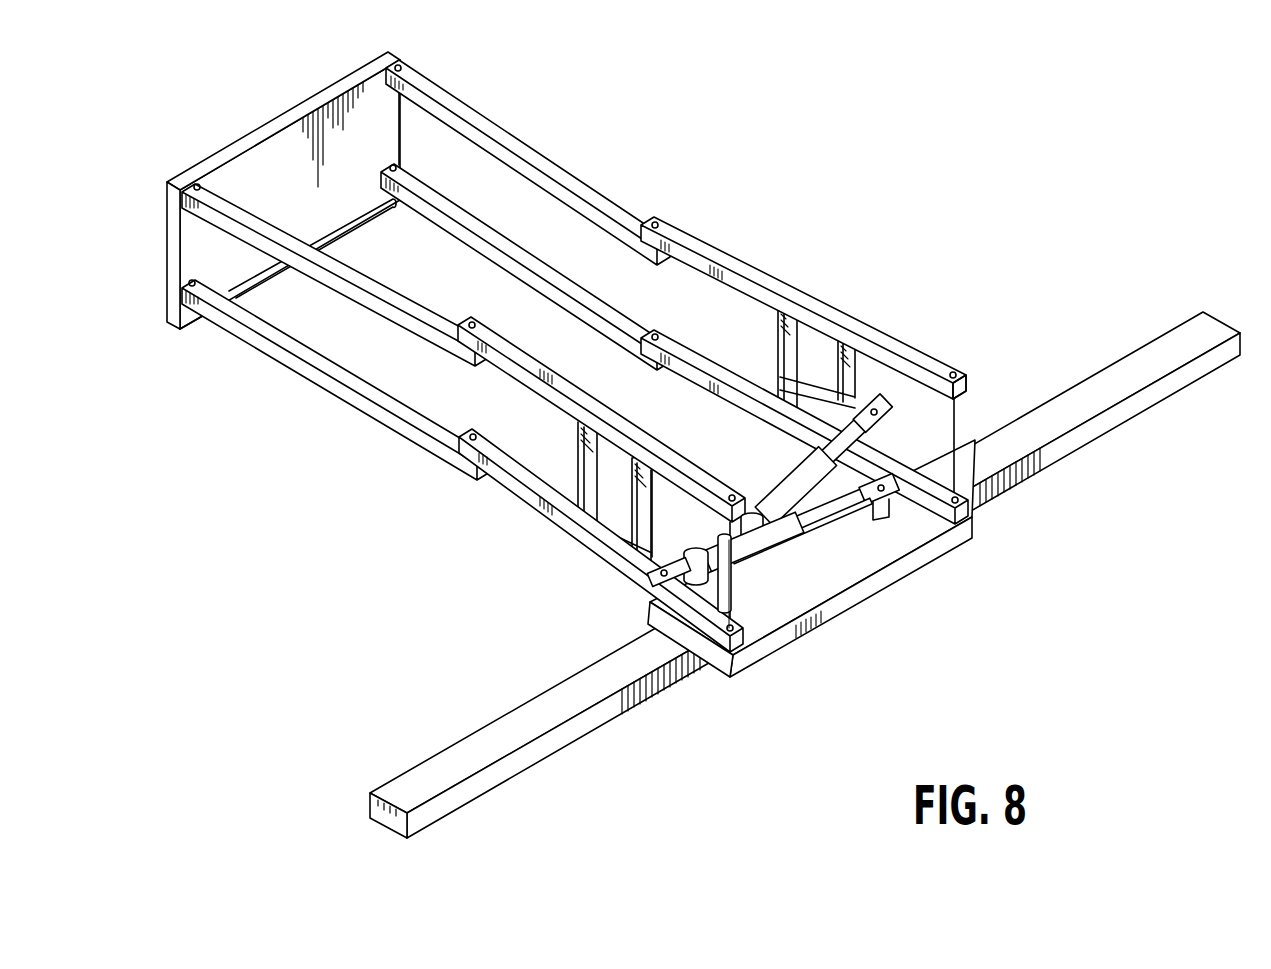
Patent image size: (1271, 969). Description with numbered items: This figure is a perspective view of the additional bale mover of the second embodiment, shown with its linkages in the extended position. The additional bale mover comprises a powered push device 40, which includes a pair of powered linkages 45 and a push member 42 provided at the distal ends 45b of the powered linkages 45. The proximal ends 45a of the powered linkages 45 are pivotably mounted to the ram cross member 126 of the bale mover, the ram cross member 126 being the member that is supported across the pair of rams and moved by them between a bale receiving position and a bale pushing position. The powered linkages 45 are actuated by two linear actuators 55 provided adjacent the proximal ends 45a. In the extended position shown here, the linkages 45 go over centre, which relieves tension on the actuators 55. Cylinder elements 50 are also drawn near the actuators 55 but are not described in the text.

The powered push device 40 is at (452, 541).
The push member 42 is at (273, 163).
The powered linkages 45 is at (766, 240).
The proximal ends 45a is at (957, 360).
The distal ends 45b is at (404, 62).
The cylinders 50 is at (773, 497).
The linear actuators 55 is at (813, 470).
The ram cross member 126 is at (540, 722).